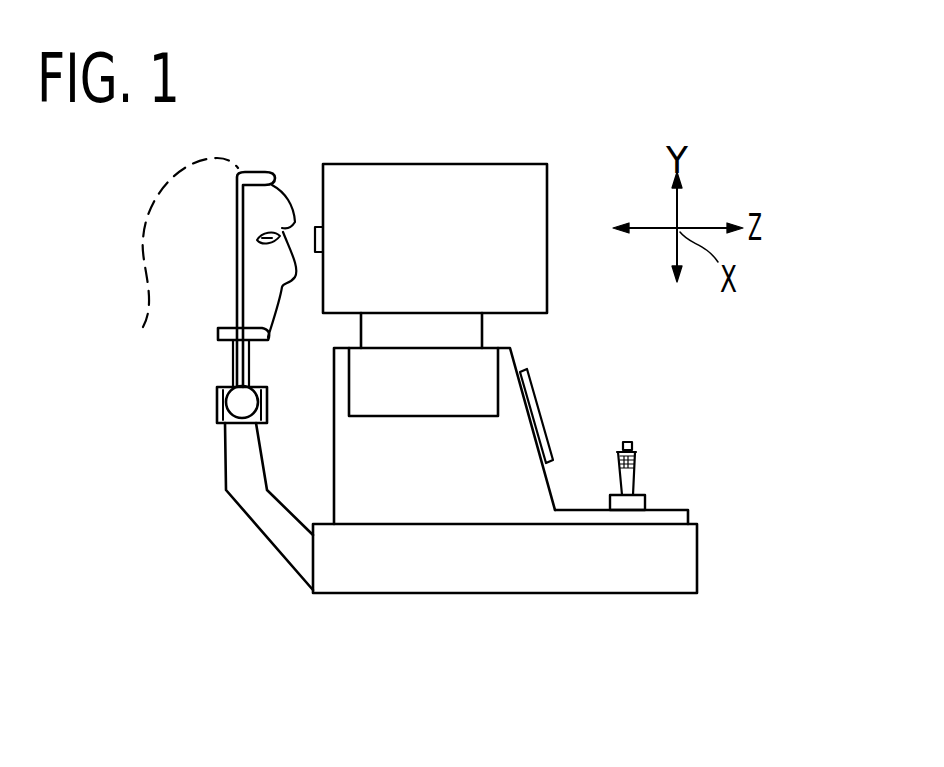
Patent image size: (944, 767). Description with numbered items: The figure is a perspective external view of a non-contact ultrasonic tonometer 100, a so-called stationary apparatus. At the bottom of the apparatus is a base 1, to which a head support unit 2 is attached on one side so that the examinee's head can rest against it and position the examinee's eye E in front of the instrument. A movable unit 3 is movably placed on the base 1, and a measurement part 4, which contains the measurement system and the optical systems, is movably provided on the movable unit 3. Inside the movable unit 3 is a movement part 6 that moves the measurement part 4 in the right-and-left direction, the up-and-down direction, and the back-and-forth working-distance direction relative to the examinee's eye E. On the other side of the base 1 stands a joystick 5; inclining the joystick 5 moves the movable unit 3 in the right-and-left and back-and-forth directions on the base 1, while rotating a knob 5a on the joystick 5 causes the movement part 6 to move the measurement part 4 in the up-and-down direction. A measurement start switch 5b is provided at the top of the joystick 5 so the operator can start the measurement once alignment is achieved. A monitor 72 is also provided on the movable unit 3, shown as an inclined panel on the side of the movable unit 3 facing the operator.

The non-contact ultrasonic tonometer 100 is at (590, 135).
The base 1 is at (648, 557).
The head support unit 2 is at (180, 415).
The movable unit 3 is at (388, 495).
The measurement part 4 is at (405, 183).
The joystick 5 is at (742, 438).
The knob 5a is at (635, 462).
The measurement start switch 5b is at (630, 440).
The movement part 6 is at (437, 395).
The monitor 72 is at (528, 383).
The examinee's eye E is at (283, 232).